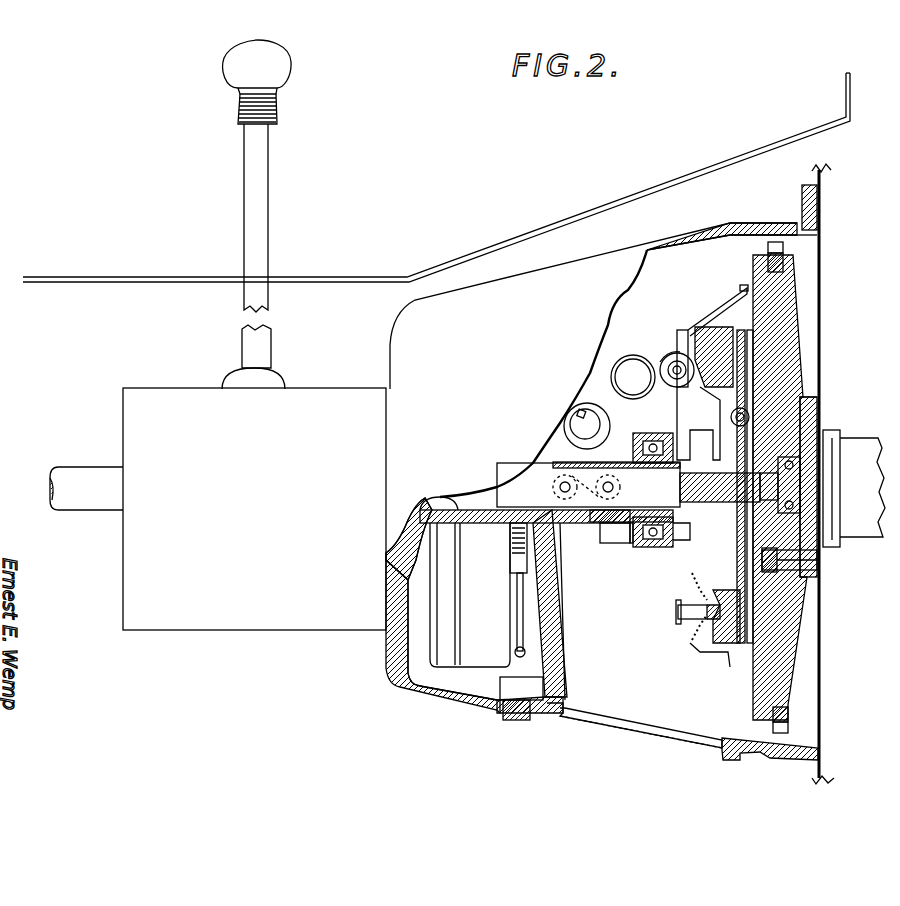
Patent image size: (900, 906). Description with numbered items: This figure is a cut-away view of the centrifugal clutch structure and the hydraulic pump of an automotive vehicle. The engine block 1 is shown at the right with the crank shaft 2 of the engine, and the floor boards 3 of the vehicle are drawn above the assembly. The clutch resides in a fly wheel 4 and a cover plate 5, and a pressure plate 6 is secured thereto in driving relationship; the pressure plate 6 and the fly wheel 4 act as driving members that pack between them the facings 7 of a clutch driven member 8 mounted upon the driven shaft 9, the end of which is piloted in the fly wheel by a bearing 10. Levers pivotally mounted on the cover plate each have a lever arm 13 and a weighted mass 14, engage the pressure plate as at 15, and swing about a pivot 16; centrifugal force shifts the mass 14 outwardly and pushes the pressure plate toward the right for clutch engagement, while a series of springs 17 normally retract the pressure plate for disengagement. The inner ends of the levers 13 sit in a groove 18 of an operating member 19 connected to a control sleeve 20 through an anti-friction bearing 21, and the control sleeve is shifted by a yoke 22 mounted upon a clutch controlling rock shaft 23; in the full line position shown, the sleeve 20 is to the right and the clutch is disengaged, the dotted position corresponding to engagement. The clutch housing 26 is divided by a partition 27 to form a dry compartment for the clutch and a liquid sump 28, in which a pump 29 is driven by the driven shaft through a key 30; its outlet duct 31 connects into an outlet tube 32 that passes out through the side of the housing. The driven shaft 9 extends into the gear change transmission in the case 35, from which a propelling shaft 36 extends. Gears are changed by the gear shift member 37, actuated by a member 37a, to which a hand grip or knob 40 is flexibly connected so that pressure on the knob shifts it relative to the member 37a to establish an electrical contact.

The engine block 1 is at (835, 177).
The crank shaft 2 is at (857, 532).
The floor boards 3 is at (677, 180).
The fly wheel 4 is at (778, 330).
The cover plate 5 is at (713, 315).
The pressure plate 6 is at (687, 337).
The facings 7 is at (748, 640).
The clutch driven member 8 is at (737, 543).
The driven shaft 9 is at (528, 487).
The bearing 10 is at (795, 460).
The lever arm 13 is at (680, 408).
The weighted mass 14 is at (613, 357).
The engagement point 15 is at (673, 353).
The pivot 16 is at (662, 358).
The springs 17 is at (687, 643).
The groove 18 is at (670, 539).
The operating member 19 is at (650, 550).
The control sleeve 20 is at (600, 527).
The anti-friction bearing 21 is at (630, 530).
The yoke 22 is at (613, 450).
The clutch controlling rock shaft 23 is at (568, 412).
The clutch housing 26 is at (682, 233).
The partition 27 is at (563, 655).
The liquid sump 28 is at (473, 680).
The pump 29 is at (447, 690).
The key 30 is at (440, 507).
The duct 31 is at (498, 503).
The outlet tube 32 is at (517, 617).
The case 35 is at (197, 615).
The propelling shaft 36 is at (90, 480).
The gear shift member 37 is at (261, 345).
The actuating member 37a is at (261, 221).
The hand grip or knob 40 is at (280, 61).